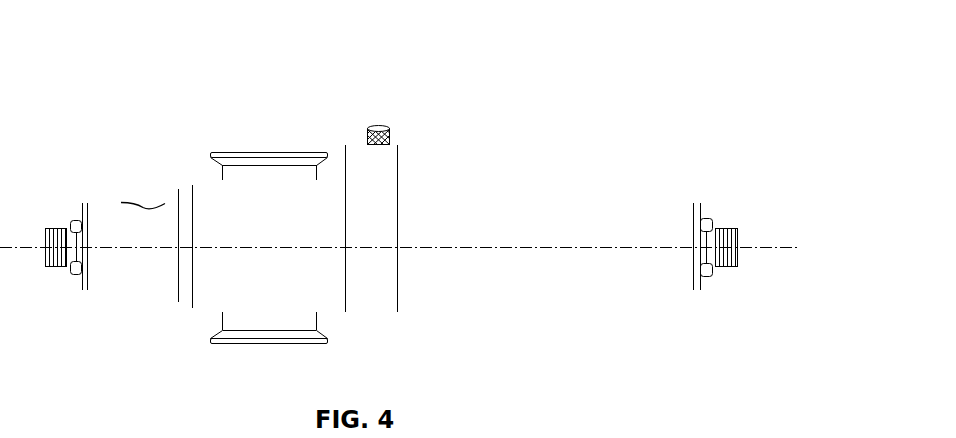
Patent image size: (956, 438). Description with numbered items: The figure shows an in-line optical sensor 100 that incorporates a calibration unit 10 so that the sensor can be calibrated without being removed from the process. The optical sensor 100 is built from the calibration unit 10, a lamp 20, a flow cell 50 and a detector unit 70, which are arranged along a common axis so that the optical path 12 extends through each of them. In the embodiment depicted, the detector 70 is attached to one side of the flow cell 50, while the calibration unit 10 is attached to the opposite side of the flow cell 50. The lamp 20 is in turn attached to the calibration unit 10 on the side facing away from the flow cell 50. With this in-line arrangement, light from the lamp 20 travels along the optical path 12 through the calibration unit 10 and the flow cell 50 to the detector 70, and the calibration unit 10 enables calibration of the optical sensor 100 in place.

The in-line optical sensor 100 is at (580, 124).
The calibration unit 10 is at (397, 312).
The optical path 12 is at (758, 245).
The lamp 20 is at (598, 204).
The flow cell 50 is at (210, 155).
The detector unit 70 is at (128, 290).